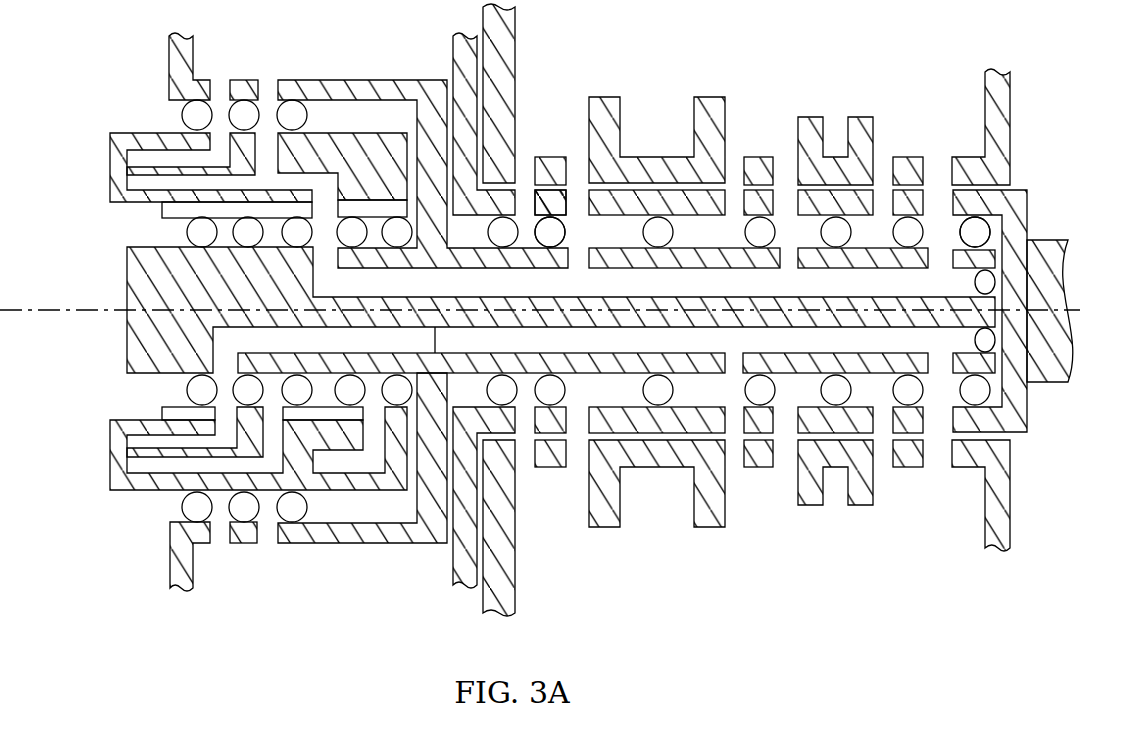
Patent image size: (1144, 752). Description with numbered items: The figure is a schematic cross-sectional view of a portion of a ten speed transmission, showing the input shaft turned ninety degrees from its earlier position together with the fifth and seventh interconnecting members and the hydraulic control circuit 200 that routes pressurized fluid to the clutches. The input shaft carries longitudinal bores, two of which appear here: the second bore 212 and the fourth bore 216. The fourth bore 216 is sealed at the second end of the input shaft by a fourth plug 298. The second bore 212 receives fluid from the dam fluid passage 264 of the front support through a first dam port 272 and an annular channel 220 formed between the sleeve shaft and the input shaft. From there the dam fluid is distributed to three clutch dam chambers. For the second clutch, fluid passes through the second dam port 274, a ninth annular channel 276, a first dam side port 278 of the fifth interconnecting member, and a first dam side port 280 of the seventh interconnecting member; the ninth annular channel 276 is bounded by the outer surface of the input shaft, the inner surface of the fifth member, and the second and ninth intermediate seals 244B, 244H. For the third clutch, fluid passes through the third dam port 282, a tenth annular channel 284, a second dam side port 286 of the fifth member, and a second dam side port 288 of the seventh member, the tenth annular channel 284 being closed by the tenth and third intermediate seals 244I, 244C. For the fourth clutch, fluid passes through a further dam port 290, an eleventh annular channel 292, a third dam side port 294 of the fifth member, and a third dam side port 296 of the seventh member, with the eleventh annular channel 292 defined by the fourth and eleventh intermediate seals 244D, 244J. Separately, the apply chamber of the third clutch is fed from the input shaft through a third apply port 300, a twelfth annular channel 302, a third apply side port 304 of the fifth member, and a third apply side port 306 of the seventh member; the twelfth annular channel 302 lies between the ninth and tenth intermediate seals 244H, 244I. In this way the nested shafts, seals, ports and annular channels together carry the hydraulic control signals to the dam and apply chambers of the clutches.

The hydraulic control circuit 200 is at (733, 63).
The second bore 212 is at (443, 270).
The fourth bore 216 is at (437, 330).
The annular channel 220 is at (327, 375).
The second intermediate seal 244B is at (551, 227).
The third intermediate seal 244C is at (835, 230).
The fourth intermediate seal 244D is at (950, 228).
The ninth intermediate seal 244H is at (660, 230).
The tenth intermediate seal 244I is at (688, 205).
The eleventh intermediate seal 244J is at (988, 233).
The dam fluid passage 264 is at (160, 176).
The first dam port 272 is at (330, 258).
The second dam port 274 is at (568, 266).
The ninth annular channel 276 is at (622, 222).
The first dam side port 278 is at (605, 97).
The first dam side port 280 is at (586, 200).
The third dam port 282 is at (782, 266).
The tenth annular channel 284 is at (855, 217).
The second dam side port 286 is at (796, 200).
The second dam side port 288 is at (753, 230).
The third dam port 290 is at (992, 260).
The eleventh annular channel 292 is at (980, 200).
The third dam side port 294 is at (908, 230).
The third dam side port 296 is at (950, 162).
The fourth plug 298 is at (990, 345).
The third apply port 300 is at (727, 357).
The twelfth annular channel 302 is at (598, 397).
The third apply side port 304 is at (693, 480).
The third apply side port 306 is at (734, 465).